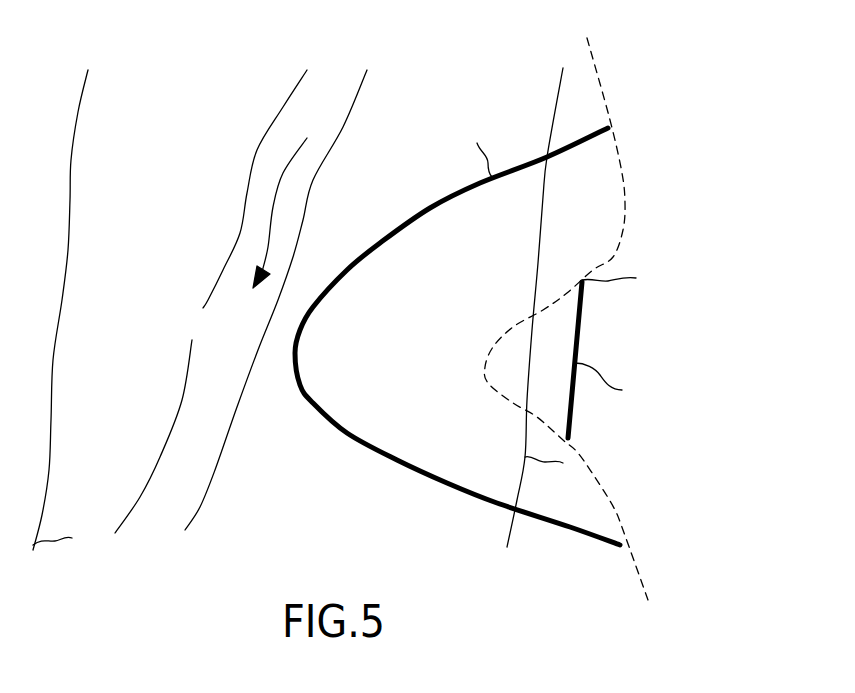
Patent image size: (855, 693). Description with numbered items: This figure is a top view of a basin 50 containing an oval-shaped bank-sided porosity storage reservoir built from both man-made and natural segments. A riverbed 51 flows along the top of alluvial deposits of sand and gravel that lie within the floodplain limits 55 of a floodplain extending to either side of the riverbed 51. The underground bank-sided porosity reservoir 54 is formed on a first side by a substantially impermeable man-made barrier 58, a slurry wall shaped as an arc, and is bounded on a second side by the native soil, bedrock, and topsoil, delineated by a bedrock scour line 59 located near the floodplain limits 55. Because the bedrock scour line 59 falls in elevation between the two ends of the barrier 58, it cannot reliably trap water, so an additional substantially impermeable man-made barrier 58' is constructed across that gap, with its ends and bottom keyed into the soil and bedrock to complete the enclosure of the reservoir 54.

The basin 50 is at (170, 122).
The riverbed 51 is at (190, 408).
The bank-sided porosity reservoir 54 is at (458, 293).
The floodplain limits 55 is at (50, 478).
The substantially impermeable man-made barrier 58 is at (457, 321).
The additional substantially impermeable man-made barrier 58' is at (635, 360).
The bedrock scour line 59 is at (625, 200).